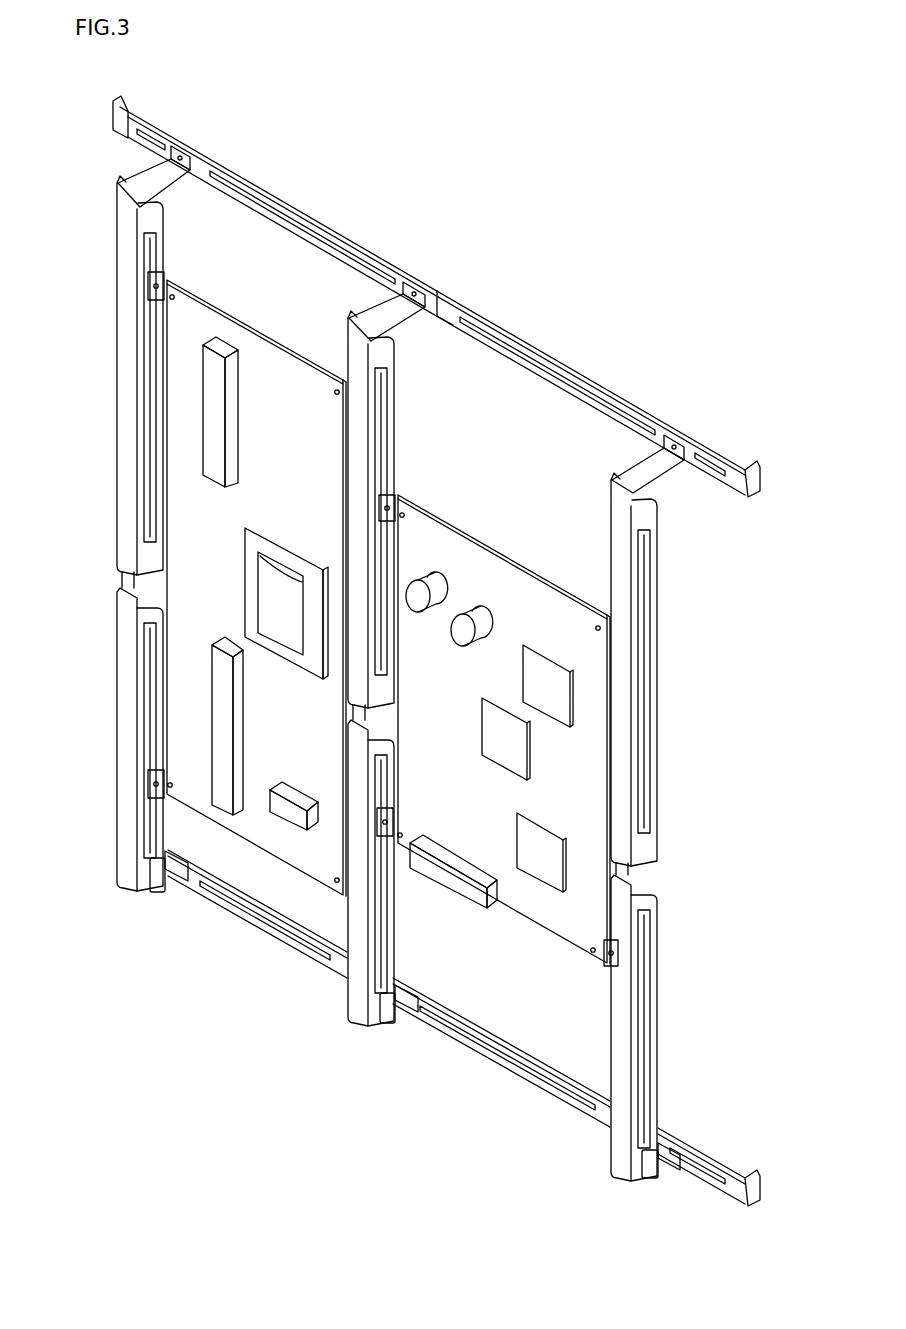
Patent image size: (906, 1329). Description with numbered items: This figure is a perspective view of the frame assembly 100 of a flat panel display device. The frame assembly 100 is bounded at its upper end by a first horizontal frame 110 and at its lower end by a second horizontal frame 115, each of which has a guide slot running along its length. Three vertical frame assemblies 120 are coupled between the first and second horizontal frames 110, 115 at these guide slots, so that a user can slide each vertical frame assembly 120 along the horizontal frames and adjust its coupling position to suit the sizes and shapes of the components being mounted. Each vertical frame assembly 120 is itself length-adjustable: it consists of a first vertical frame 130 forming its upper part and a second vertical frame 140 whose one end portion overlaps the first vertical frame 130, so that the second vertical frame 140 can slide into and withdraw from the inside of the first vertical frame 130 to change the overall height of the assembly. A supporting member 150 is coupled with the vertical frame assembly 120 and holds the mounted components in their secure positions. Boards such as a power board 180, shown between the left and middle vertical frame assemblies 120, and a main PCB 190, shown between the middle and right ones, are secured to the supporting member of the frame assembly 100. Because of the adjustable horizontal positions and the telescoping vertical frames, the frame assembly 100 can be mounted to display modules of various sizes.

The frame assembly 100 is at (480, 219).
The first horizontal frame 110 is at (113, 125).
The second horizontal frame 115 is at (441, 1023).
The vertical frame assembly 120 is at (98, 257).
The first vertical frame 130 is at (122, 363).
The second vertical frame 140 is at (122, 699).
The supporting member 150 is at (150, 788).
The power board 180 is at (308, 857).
The main PCB 190 is at (556, 913).